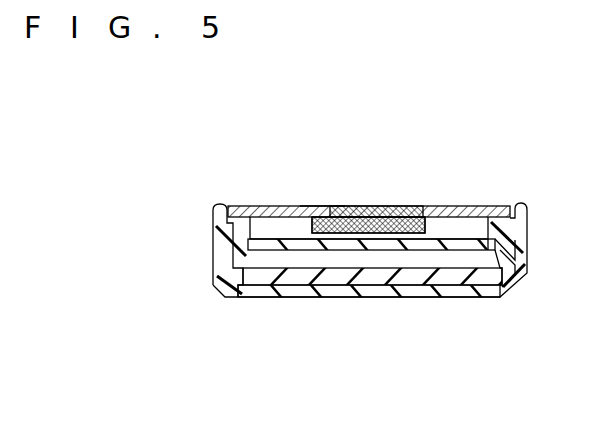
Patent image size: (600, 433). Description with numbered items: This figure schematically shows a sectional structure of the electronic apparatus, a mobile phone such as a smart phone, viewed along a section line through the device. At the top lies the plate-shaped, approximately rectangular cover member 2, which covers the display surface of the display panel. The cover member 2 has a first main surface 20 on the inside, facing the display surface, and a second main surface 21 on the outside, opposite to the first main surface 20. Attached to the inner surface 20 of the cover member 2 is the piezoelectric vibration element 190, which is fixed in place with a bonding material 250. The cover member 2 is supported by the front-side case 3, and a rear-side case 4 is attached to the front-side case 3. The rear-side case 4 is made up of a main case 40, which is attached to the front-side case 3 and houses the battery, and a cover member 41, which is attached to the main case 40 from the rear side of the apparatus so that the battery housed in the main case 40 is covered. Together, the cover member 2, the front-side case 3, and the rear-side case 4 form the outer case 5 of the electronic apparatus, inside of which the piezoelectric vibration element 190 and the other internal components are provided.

The cover member 2 is at (283, 205).
The second main surface 21 is at (322, 205).
The bonding material 250 is at (363, 205).
The piezoelectric vibration element 190 is at (410, 205).
The first main surface 20 is at (288, 222).
The front-side case 3 is at (447, 248).
The rear-side case 4 is at (377, 328).
The main case 40 is at (392, 275).
The cover member 41 is at (347, 298).
The outer case 5 is at (527, 280).